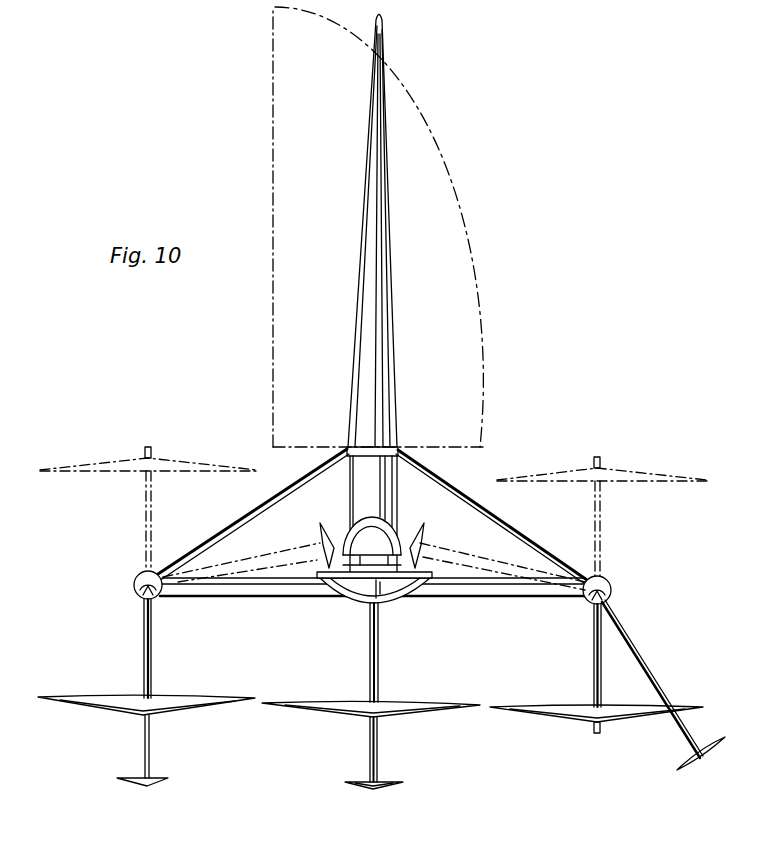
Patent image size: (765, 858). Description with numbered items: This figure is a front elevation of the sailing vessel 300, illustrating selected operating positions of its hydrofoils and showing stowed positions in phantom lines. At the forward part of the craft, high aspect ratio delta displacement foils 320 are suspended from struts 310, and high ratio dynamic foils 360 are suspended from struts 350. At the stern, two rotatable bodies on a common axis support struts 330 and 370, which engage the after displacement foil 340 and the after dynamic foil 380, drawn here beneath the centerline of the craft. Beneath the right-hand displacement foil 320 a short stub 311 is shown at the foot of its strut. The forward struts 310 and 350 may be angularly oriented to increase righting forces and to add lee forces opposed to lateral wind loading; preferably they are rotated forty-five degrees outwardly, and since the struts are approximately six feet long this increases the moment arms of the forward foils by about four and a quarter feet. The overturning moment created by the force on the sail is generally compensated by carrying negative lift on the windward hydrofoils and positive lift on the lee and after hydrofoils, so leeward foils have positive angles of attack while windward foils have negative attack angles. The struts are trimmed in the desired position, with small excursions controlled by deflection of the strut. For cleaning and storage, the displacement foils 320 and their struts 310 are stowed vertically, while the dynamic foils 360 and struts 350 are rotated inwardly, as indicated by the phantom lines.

The sailing vessel 300 is at (503, 402).
The strut 310 is at (140, 497).
The post stub 311 is at (602, 732).
The delta displacement foil 320 is at (110, 463).
The strut 330 is at (378, 643).
The displacement foil 340 is at (353, 712).
The strut 350 is at (260, 557).
The dynamic foil 360 is at (412, 530).
The strut 370 is at (380, 745).
The dynamic foil 380 is at (380, 790).